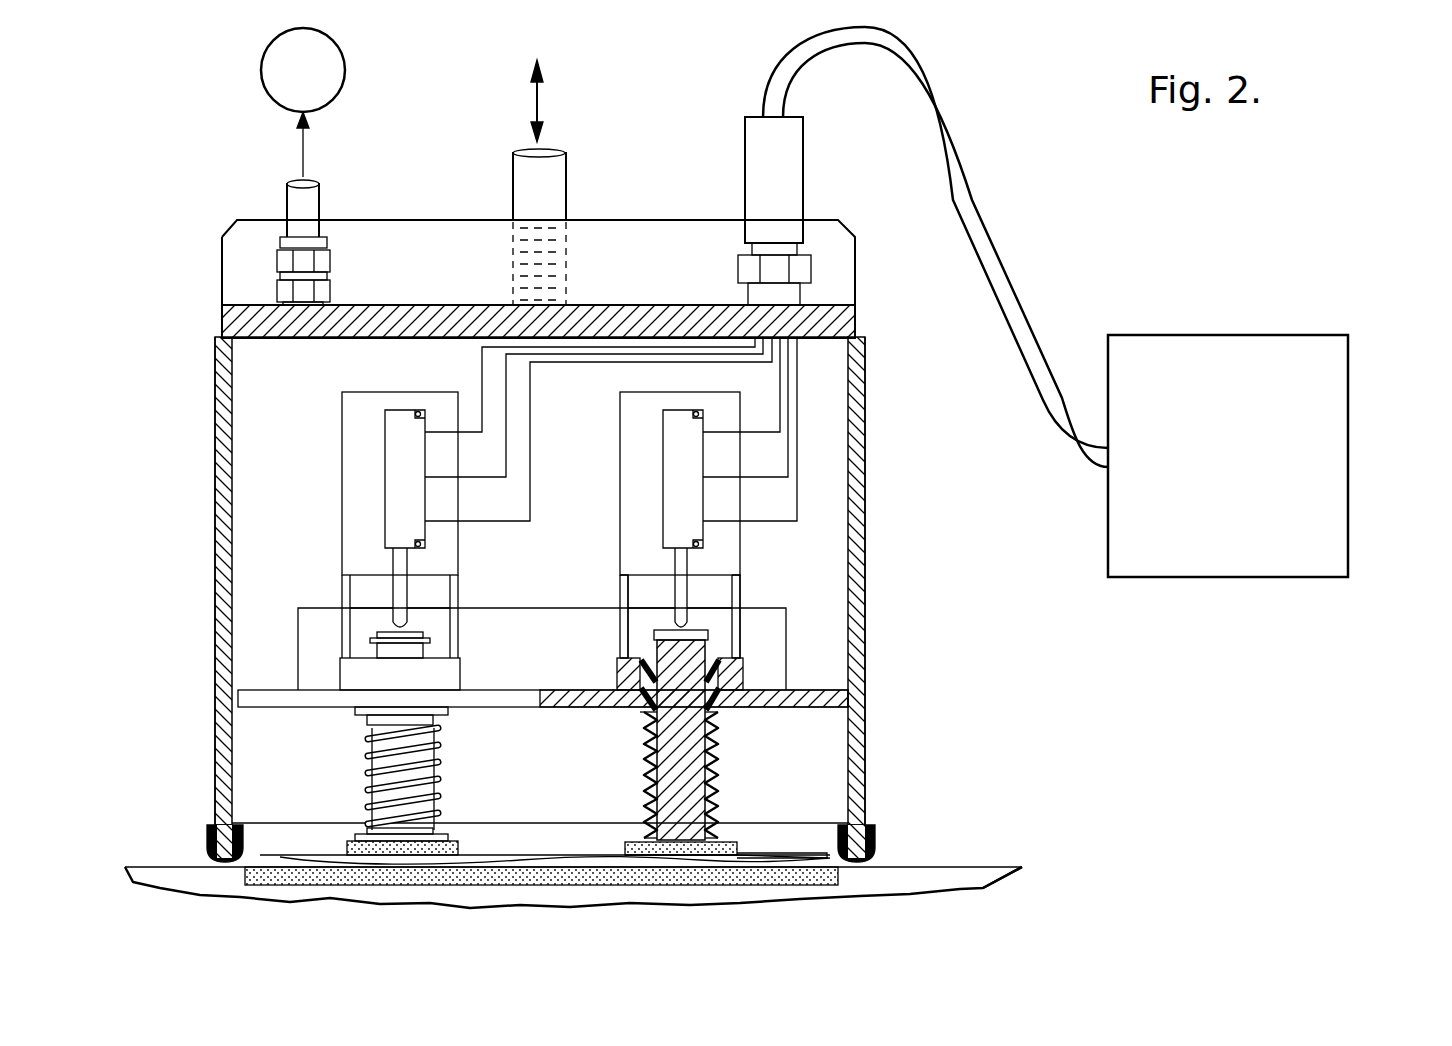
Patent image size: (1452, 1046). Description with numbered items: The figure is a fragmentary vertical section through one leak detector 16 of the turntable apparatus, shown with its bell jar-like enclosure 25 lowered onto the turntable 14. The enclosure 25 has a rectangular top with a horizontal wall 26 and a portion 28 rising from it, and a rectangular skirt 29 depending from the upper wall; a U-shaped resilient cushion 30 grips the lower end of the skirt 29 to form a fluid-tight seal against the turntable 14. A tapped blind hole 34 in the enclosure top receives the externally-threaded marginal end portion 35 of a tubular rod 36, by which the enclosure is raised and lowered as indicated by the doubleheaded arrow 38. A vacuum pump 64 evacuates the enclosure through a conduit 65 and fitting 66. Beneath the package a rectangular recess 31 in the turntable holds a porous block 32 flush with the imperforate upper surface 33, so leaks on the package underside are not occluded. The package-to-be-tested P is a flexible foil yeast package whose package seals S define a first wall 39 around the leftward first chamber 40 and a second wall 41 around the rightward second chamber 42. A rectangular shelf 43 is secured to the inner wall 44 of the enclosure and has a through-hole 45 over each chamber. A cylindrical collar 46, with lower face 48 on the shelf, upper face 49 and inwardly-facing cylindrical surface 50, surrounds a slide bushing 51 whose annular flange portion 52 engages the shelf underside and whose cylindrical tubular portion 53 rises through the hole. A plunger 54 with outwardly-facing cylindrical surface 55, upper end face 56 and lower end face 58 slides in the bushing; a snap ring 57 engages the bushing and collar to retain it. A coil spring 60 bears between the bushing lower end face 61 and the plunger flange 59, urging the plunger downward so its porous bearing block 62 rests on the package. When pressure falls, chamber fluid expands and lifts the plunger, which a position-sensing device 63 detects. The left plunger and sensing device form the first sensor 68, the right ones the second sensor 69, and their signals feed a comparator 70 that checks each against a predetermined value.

The work surface 14 is at (1005, 860).
The leak detector 16 is at (172, 338).
The enclosure 25 is at (210, 518).
The horizontal wall 26 is at (408, 316).
The portion 28 is at (440, 232).
The skirt 29 is at (215, 595).
The resilient cushion 30 is at (878, 836).
The rectangular recess 31 is at (268, 878).
The porous block 32 is at (546, 878).
The imperforate upper surface 33 is at (152, 866).
The tapped blind hole 34 is at (513, 258).
The externally-threaded marginal end portion 35 is at (566, 252).
The tubular rod 36 is at (566, 190).
The doubleheaded arrow 38 is at (540, 102).
The first wall 39 is at (322, 860).
The first chamber 40 is at (402, 862).
The second wall 41 is at (757, 858).
The second chamber 42 is at (692, 878).
The shelf 43 is at (520, 698).
The inner wall 44 is at (232, 750).
The through-hole 45 is at (640, 712).
The cylindrical collar 46 is at (622, 668).
The lower face 48 is at (720, 712).
The upper face 49 is at (736, 648).
The inwardly-facing cylindrical surface 50 is at (658, 688).
The slide bushing 51 is at (645, 652).
The annular flange portion 52 is at (745, 735).
The cylindrical tubular portion 53 is at (657, 704).
The plunger 54 is at (710, 782).
The outwardly-facing cylindrical surface 55 is at (694, 766).
The upper end face 56 is at (698, 622).
The snap ring 57 is at (655, 622).
The lower end face 58 is at (660, 868).
The flange 59 is at (722, 840).
The coil spring 60 is at (644, 762).
The lower end face 61 is at (714, 724).
The porous bearing block 62 is at (632, 842).
The position-sensing device 63 is at (678, 455).
The vacuum pump 64 is at (261, 72).
The conduit 65 is at (287, 194).
The fitting 66 is at (277, 277).
The first sensor 68 is at (372, 492).
The second sensor 69 is at (660, 492).
The comparator 70 is at (1350, 472).
The package-to-be-tested P is at (487, 848).
The package seals S is at (283, 860).